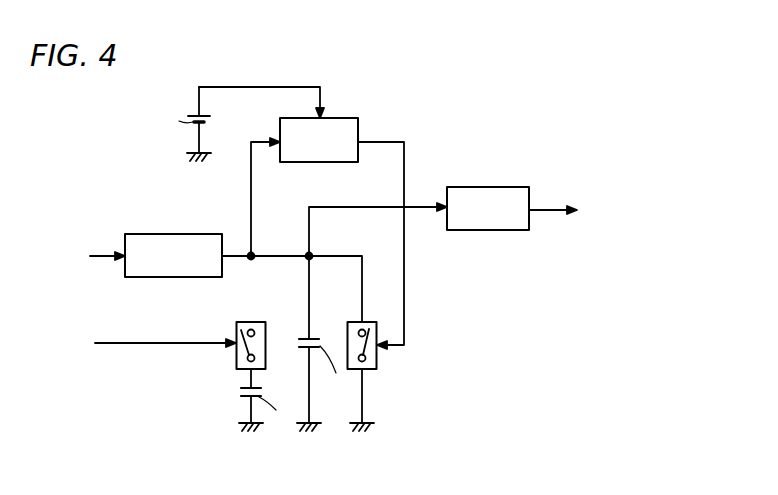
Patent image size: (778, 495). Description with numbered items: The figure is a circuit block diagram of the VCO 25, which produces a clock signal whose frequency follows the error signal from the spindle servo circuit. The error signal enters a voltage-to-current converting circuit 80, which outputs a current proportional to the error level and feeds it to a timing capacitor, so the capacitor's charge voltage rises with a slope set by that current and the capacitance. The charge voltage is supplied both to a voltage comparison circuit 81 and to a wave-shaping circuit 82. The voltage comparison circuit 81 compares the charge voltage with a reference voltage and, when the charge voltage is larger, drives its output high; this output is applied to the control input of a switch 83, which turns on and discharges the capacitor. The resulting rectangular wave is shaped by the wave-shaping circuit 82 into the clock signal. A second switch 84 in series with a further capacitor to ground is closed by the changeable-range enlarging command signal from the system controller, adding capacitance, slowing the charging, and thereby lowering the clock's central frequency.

The VCO 25 is at (327, 259).
The voltage-to-current converting circuit 80 is at (162, 278).
The voltage comparison circuit 81 is at (302, 163).
The wave-shaping circuit 82 is at (480, 231).
The switch 83 is at (378, 363).
The switch 84 is at (265, 350).